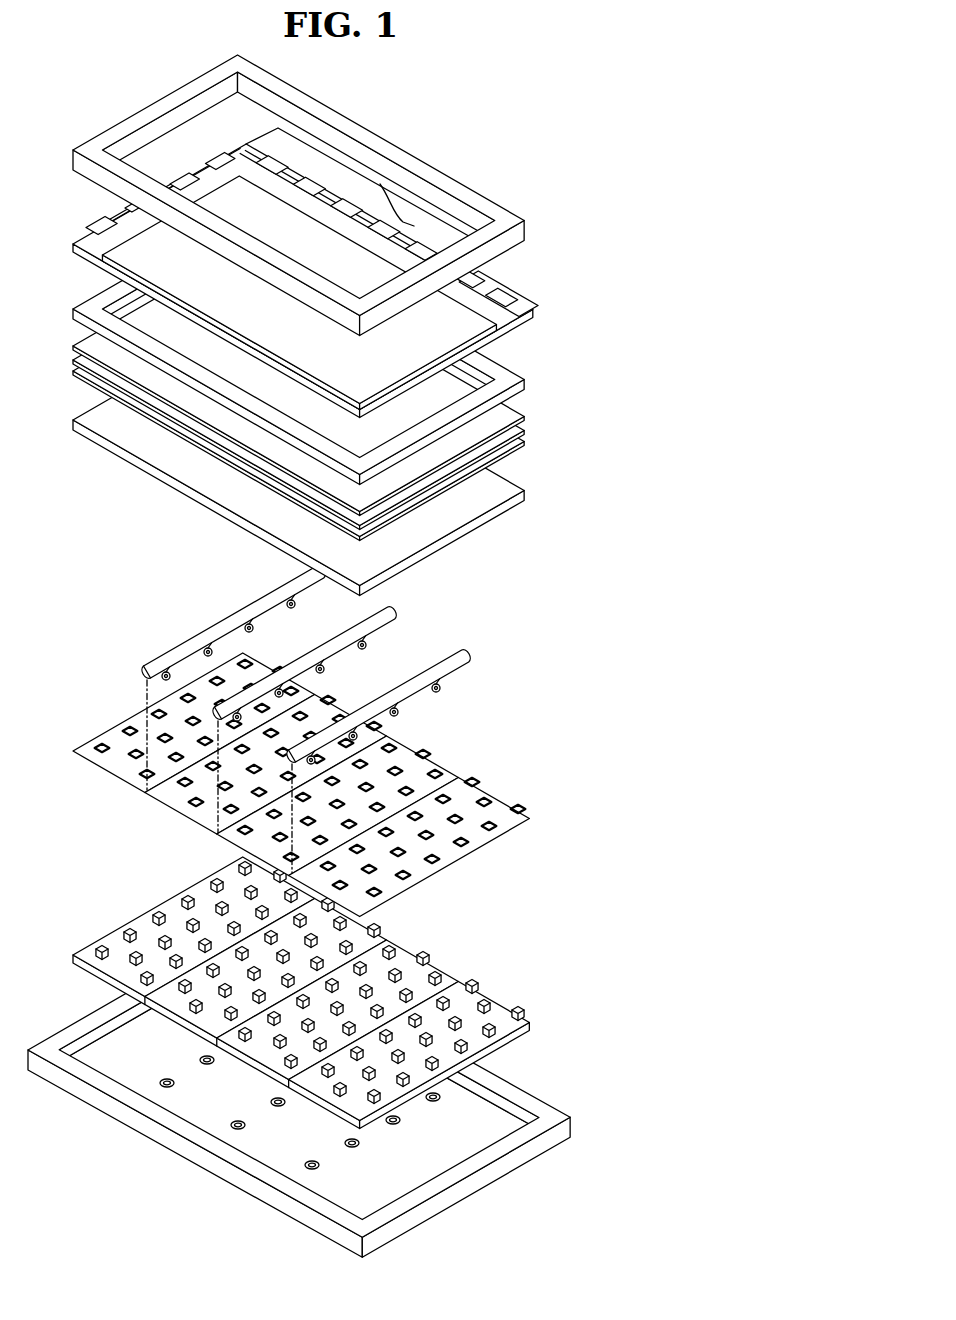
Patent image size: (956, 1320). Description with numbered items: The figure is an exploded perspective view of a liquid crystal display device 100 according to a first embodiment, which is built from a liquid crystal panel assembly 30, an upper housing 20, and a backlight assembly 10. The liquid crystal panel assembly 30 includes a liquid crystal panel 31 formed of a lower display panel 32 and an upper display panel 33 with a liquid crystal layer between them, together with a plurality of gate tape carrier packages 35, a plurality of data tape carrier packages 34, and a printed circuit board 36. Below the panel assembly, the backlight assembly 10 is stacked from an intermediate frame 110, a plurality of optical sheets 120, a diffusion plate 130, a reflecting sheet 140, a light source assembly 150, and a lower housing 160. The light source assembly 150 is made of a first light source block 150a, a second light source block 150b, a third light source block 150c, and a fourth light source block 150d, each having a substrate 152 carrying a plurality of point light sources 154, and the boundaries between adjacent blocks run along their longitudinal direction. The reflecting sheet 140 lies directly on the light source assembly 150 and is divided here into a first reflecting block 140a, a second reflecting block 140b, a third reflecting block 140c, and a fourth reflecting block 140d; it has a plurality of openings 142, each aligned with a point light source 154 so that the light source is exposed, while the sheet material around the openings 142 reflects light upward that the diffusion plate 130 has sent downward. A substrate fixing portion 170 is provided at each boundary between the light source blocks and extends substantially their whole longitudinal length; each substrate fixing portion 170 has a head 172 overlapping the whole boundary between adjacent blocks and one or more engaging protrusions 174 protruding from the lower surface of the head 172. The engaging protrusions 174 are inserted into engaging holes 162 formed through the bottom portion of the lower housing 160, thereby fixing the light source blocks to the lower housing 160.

The liquid crystal display device 100 is at (342, 656).
The upper housing 20 is at (531, 229).
The liquid crystal panel assembly 30 is at (365, 273).
The liquid crystal panel 31 is at (341, 273).
The lower display panel 32 is at (505, 318).
The upper display panel 33 is at (508, 340).
The data tape carrier package 34 is at (526, 300).
The gate tape carrier package 35 is at (96, 224).
The printed circuit board 36 is at (542, 303).
The backlight assembly 10 is at (323, 735).
The intermediate frame 110 is at (336, 349).
The optical sheets 120 is at (545, 417).
The diffusion plate 130 is at (529, 496).
The reflecting sheet 140 is at (321, 785).
The first reflecting block 140a is at (120, 765).
The second reflecting block 140b is at (178, 801).
The third reflecting block 140c is at (428, 764).
The fourth reflecting block 140d is at (508, 812).
The opening 142 is at (94, 744).
The light source assembly 150 is at (296, 993).
The first light source block 150a is at (85, 953).
The second light source block 150b is at (377, 937).
The third light source block 150c is at (412, 960).
The fourth light source block 150d is at (516, 1013).
The substrate 152 is at (150, 912).
The point light source 154 is at (125, 925).
The lower housing 160 is at (317, 1093).
The engaging hole 162 is at (158, 1086).
The substrate fixing portion 170 is at (251, 719).
The head 172 is at (183, 652).
The engaging protrusion 174 is at (163, 673).